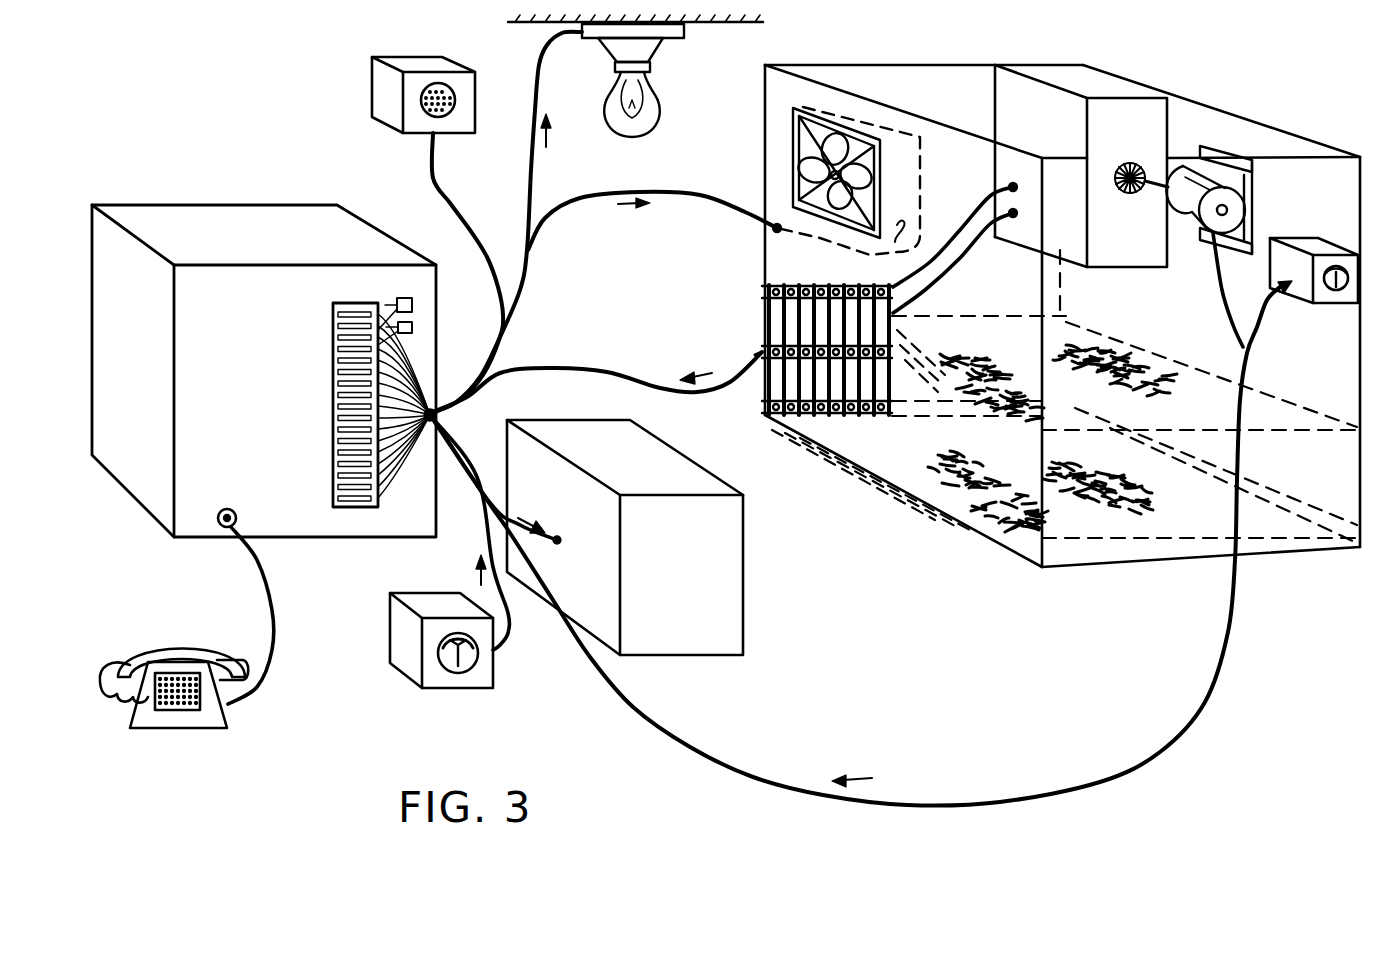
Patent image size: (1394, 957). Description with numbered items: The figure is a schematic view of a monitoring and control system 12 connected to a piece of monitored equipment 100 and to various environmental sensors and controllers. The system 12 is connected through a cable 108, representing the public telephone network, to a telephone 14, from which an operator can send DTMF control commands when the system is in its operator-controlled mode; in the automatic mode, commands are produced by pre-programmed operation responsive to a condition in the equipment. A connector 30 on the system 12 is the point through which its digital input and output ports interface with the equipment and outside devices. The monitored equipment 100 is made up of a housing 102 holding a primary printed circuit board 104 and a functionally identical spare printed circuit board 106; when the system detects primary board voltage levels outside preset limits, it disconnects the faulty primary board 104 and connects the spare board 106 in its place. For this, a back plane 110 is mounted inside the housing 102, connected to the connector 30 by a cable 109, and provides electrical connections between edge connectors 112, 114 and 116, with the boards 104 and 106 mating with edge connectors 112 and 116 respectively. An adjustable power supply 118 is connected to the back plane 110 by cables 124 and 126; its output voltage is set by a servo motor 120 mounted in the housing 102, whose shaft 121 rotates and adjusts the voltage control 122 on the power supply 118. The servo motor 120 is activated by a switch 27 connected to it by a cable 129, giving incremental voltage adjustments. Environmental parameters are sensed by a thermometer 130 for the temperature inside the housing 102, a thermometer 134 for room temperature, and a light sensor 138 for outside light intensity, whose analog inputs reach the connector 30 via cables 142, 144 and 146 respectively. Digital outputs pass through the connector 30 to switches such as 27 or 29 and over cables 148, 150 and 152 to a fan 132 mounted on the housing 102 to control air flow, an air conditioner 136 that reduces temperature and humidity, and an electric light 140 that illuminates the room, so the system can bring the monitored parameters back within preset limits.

The monitoring and control system 12 is at (244, 218).
The telephone 14 is at (160, 643).
The switch 27 is at (396, 303).
The switch 29 is at (413, 328).
The connector 30 is at (320, 408).
The monitored equipment 100 is at (972, 82).
The housing 102 is at (1012, 552).
The primary printed circuit board 104 is at (1300, 420).
The spare printed circuit board 106 is at (1170, 540).
The cable 108 is at (273, 600).
The cable 109 is at (576, 368).
The back plane 110 is at (762, 350).
The edge connector 112 is at (762, 294).
The edge connector 114 is at (762, 318).
The edge connector 116 is at (762, 410).
The adjustable power supply 118 is at (1128, 238).
The servo motor 120 is at (1240, 200).
The shaft 121 is at (1176, 162).
The voltage control 122 is at (1120, 168).
The cable 124 is at (950, 248).
The cable 126 is at (945, 278).
The cable 129 is at (1226, 272).
The thermometer 130 is at (1310, 246).
The fan 132 is at (883, 195).
The thermometer 134 is at (390, 670).
The air conditioner 136 is at (743, 560).
The light sensor 138 is at (398, 58).
The electric light 140 is at (612, 96).
The cable 142 is at (1274, 303).
The cable 144 is at (512, 634).
The cable 146 is at (432, 178).
The cable 148 is at (676, 200).
The cable 150 is at (557, 542).
The cable 152 is at (534, 52).